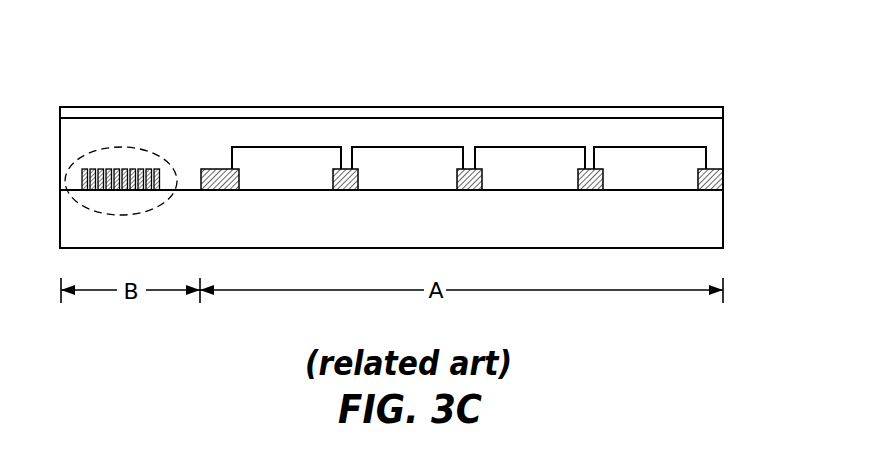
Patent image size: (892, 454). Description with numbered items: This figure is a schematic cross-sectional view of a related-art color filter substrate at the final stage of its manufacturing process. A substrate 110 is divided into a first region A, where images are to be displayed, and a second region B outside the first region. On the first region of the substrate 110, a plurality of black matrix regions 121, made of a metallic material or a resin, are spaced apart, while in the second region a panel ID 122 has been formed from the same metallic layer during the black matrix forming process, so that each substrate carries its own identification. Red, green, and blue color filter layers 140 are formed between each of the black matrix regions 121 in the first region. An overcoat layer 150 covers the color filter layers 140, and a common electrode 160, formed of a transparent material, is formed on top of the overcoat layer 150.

The substrate 110 is at (713, 223).
The black matrix regions 121 is at (223, 169).
The panel ID 122 is at (137, 147).
The color filter layers 140 is at (290, 155).
The overcoat layer 150 is at (713, 138).
The common electrode 160 is at (718, 117).